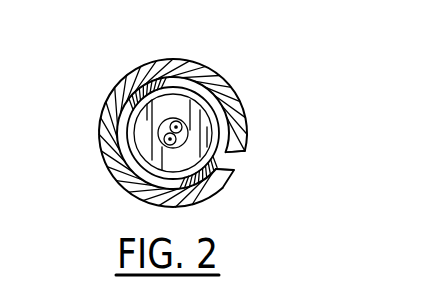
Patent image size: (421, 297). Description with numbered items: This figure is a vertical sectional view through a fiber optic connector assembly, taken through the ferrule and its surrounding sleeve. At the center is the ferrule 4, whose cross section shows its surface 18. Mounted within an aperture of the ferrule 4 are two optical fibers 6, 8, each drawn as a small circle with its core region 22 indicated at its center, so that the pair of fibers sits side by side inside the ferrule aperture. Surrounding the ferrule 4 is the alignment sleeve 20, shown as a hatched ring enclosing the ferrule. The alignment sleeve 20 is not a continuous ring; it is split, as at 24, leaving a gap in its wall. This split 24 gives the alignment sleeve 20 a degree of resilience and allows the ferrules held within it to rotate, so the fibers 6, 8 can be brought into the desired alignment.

The ferrule 4 is at (214, 186).
The optical fiber 6 is at (117, 75).
The optical fiber 8 is at (128, 94).
The surface 18 is at (207, 127).
The alignment sleeve 20 is at (224, 79).
The core regions 22 is at (166, 140).
The split 24 is at (232, 167).